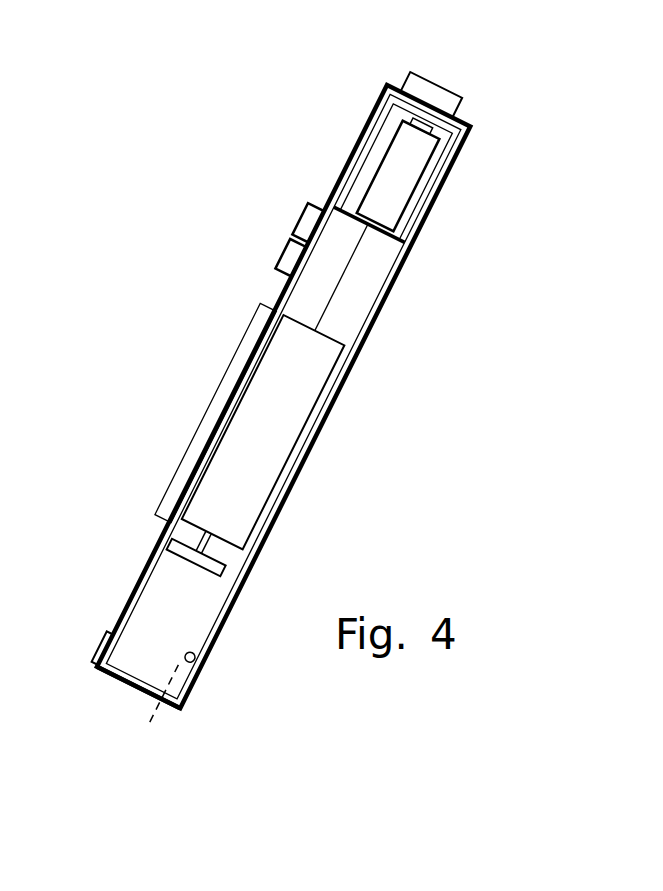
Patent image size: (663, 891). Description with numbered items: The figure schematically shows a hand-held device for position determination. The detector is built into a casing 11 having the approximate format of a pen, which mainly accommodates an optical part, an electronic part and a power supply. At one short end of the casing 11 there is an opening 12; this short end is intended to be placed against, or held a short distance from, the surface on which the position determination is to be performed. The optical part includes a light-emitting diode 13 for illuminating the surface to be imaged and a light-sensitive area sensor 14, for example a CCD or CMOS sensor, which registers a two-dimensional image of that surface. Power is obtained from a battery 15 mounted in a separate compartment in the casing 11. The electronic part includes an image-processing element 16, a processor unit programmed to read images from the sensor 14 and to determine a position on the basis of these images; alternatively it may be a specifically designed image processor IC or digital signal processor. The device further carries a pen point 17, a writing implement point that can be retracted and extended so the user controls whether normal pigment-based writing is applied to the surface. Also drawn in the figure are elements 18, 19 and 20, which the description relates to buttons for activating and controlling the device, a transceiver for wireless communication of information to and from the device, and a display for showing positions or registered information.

The casing 11 is at (357, 370).
The opening 12 is at (123, 691).
The light-emitting diode 13 is at (194, 660).
The light-sensitive area sensor 14 is at (224, 567).
The battery 15 is at (397, 183).
The image-processing element 16 is at (263, 462).
The pen point 17 is at (98, 640).
The contacts 18 is at (302, 223).
The cap 19 is at (436, 94).
The cover plate 20 is at (215, 394).